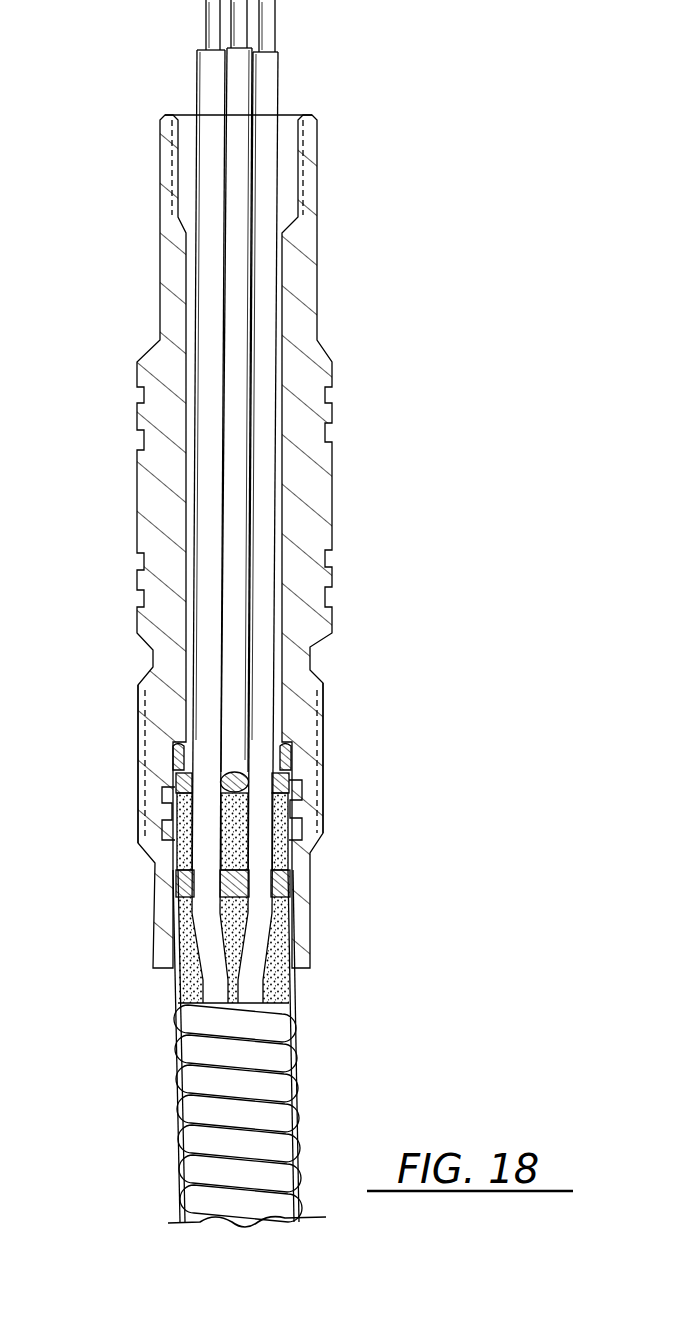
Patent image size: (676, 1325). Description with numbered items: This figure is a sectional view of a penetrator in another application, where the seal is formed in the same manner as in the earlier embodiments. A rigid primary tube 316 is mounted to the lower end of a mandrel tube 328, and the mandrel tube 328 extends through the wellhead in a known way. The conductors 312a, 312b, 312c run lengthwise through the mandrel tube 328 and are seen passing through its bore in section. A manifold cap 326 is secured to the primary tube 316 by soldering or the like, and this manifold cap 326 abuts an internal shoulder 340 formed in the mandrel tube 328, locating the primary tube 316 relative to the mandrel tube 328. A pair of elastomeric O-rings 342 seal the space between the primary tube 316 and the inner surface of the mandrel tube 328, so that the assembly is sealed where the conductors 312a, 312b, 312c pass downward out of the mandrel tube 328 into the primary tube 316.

The conductor 312a is at (201, 91).
The conductor 312b is at (240, 82).
The conductor 312c is at (272, 96).
The primary tube 316 is at (292, 1042).
The manifold cap 326 is at (173, 748).
The mandrel tube 328 is at (320, 822).
The internal shoulder 340 is at (287, 742).
The elastomeric O-rings 342 is at (287, 790).